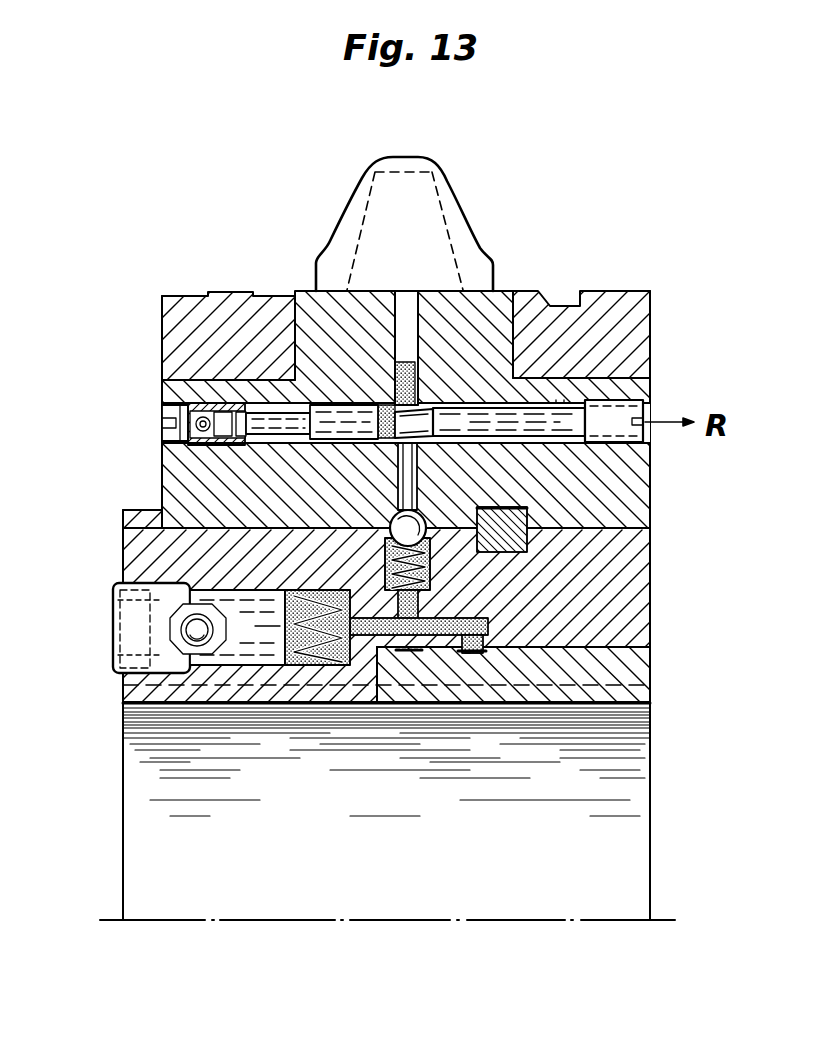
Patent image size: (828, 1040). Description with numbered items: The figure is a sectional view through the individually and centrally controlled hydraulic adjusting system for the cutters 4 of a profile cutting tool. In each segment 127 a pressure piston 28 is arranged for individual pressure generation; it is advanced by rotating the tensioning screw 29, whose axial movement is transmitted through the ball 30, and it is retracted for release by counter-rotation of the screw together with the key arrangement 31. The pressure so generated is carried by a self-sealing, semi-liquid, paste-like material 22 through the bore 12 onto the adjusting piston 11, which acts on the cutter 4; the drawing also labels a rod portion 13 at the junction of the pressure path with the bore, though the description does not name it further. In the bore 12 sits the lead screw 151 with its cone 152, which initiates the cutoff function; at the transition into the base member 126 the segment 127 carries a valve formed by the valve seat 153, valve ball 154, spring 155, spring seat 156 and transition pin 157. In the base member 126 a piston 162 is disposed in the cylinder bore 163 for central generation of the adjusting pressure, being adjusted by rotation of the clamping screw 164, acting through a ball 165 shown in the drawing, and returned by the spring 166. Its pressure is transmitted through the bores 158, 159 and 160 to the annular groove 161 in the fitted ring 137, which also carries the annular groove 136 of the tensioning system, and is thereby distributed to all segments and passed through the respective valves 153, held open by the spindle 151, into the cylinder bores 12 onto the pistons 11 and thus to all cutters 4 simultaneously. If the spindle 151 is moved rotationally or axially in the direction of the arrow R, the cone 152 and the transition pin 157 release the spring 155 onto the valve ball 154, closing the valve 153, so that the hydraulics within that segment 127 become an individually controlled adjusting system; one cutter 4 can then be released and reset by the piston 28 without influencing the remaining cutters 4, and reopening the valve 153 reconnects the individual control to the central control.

The cutter 4 is at (358, 210).
The adjusting piston 11 is at (407, 292).
The bore 12 is at (415, 368).
The tapered rod portion 13 is at (385, 405).
The self-sealing semi-liquid paste-like material 22 is at (415, 392).
The pressure piston 28 is at (356, 440).
The tensioning screw 29 is at (170, 415).
The ball 30 is at (185, 405).
The key arrangement 31 is at (232, 412).
The base member 126 is at (140, 555).
The segment 127 is at (138, 520).
The annular groove 136 is at (430, 660).
The fitted ring 137 is at (634, 669).
The lead screw 151 is at (540, 428).
The cone 152 is at (388, 405).
The valve seat 153 is at (392, 516).
The valve ball 154 is at (425, 522).
The spring 155 is at (432, 576).
The spring seat 156 is at (420, 613).
The transition pin 157 is at (418, 463).
The bore 158 is at (386, 603).
The bore 159 is at (390, 651).
The bore 160 is at (486, 645).
The annular groove 161 is at (480, 658).
The piston 162 is at (240, 600).
The cylinder bore 163 is at (302, 665).
The clamping screw 164 is at (136, 672).
The ball 165 is at (185, 626).
The spring 166 is at (332, 665).